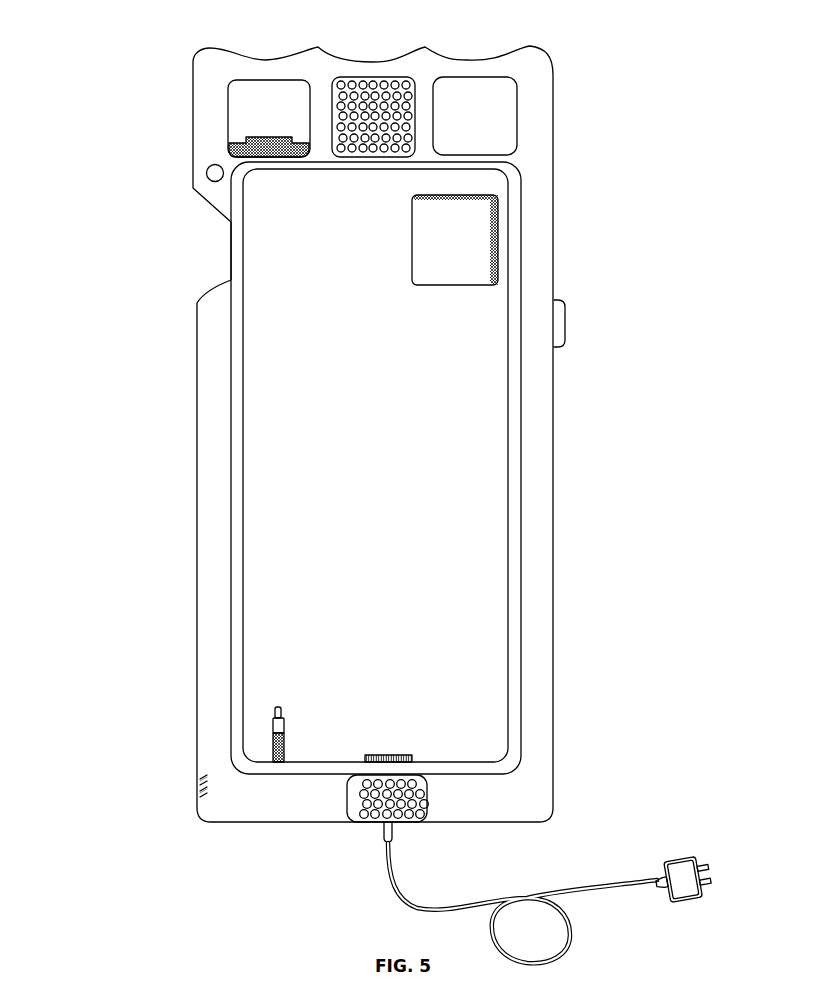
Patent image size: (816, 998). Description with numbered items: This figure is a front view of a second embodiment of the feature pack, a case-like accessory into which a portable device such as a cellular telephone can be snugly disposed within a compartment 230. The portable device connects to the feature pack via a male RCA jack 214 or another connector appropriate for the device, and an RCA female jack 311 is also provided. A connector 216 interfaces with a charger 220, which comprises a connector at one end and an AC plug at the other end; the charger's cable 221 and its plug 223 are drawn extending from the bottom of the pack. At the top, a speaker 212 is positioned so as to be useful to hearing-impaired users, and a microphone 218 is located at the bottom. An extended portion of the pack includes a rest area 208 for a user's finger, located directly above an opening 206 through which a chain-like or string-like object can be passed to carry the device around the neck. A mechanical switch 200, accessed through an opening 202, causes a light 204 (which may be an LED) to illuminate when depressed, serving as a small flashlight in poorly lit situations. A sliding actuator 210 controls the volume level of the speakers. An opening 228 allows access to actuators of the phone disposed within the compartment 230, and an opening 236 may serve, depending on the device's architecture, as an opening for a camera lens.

The mechanical switch 200 is at (272, 137).
The opening 202 is at (242, 122).
The light 204 is at (206, 172).
The opening 206 is at (500, 103).
The rest area 208 is at (467, 60).
The actuator 210 is at (567, 322).
The speaker 212 is at (413, 148).
The male RCA jack 214 is at (272, 727).
The connector 216 is at (398, 755).
The microphone 218 is at (427, 797).
The charger 220 is at (374, 830).
The cable 221 is at (438, 905).
The power plug 223 is at (684, 900).
The opening 228 is at (230, 243).
The compartment 230 is at (341, 481).
The opening 236 is at (453, 250).
The RCA female jack 311 is at (200, 795).